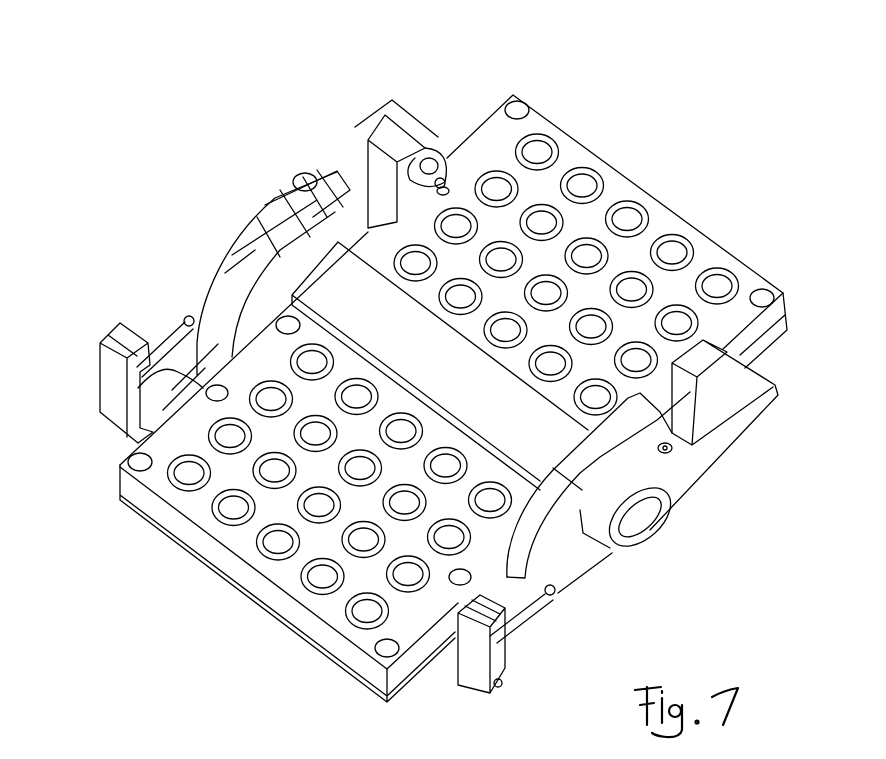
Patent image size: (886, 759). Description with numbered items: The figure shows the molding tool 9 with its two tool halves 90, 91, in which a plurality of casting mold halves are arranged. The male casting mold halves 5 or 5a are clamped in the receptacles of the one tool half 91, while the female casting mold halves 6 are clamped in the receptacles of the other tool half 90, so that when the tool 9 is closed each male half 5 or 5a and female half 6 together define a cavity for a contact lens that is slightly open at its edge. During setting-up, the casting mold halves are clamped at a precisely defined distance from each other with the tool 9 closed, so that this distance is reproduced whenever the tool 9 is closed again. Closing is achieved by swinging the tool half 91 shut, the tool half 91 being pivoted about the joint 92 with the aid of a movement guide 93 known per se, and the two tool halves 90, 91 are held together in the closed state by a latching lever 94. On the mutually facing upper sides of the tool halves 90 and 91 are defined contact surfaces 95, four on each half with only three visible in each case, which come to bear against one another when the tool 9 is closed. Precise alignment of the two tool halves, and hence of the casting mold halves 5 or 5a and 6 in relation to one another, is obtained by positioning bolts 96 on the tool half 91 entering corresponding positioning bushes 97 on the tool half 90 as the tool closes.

The male casting mold half 5 is at (599, 274).
The male casting mold half 5a is at (627, 215).
The female casting mold half 6 is at (280, 543).
The tool 9 is at (190, 195).
The tool half 90 is at (178, 568).
The tool half 91 is at (628, 155).
The joint 92 is at (357, 297).
The movement guide 93 is at (312, 138).
The latching lever 94 is at (477, 680).
The contact surfaces 95 is at (522, 108).
The positioning bolts 96 is at (446, 162).
The positioning bushes 97 is at (180, 362).